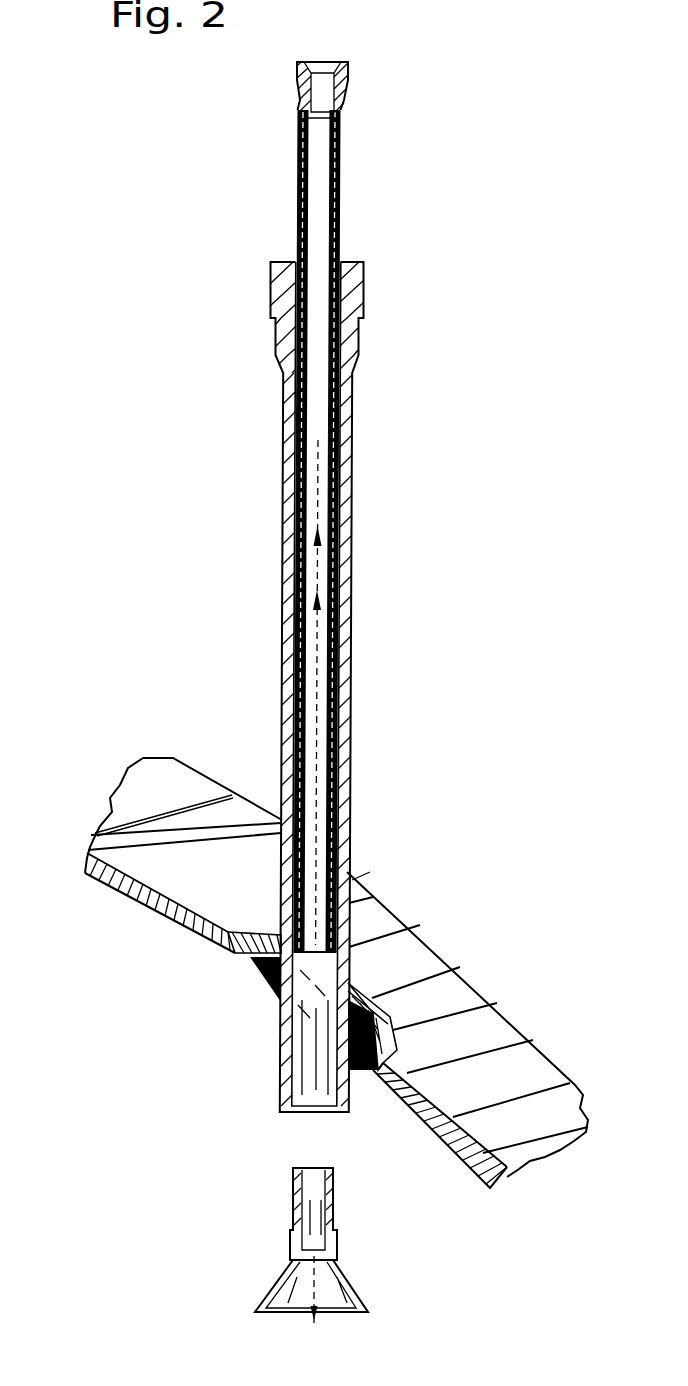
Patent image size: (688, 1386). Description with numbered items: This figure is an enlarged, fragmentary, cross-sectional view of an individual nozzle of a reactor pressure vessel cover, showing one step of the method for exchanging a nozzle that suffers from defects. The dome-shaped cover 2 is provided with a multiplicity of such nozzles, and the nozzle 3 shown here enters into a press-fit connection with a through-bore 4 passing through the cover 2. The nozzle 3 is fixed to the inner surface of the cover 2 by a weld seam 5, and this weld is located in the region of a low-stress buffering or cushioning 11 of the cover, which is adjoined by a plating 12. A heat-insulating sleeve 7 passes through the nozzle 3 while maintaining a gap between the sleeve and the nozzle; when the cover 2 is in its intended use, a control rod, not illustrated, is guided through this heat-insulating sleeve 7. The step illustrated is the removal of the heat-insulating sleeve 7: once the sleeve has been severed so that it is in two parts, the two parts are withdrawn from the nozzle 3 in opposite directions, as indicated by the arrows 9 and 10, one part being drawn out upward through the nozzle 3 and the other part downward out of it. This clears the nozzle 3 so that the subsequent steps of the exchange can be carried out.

The reactor pressure vessel cover 2 is at (145, 792).
The nozzle 3 is at (348, 758).
The through-bore 4 is at (372, 870).
The weld seam 5 is at (258, 975).
The heat-insulating sleeve 7 is at (333, 1200).
The arrow 9 is at (347, 573).
The arrow 10 is at (277, 1290).
The low-stress buffering 11 is at (255, 945).
The plating 12 is at (140, 892).